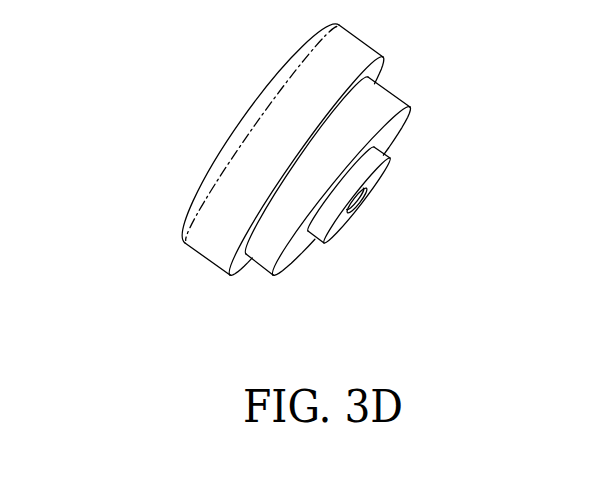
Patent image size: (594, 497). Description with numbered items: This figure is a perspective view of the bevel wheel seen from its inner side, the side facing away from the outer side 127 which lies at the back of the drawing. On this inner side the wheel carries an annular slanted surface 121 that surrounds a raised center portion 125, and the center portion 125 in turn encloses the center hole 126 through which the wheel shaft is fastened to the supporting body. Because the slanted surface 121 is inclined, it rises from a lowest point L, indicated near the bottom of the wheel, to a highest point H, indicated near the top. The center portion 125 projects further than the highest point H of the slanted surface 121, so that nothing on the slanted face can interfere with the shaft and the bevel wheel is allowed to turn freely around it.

The outer side 127 is at (223, 143).
The annular slanted surface 121 is at (384, 136).
The center portion 125 is at (370, 178).
The center hole 126 is at (358, 212).
The highest point H is at (418, 124).
The lowest point L is at (272, 274).